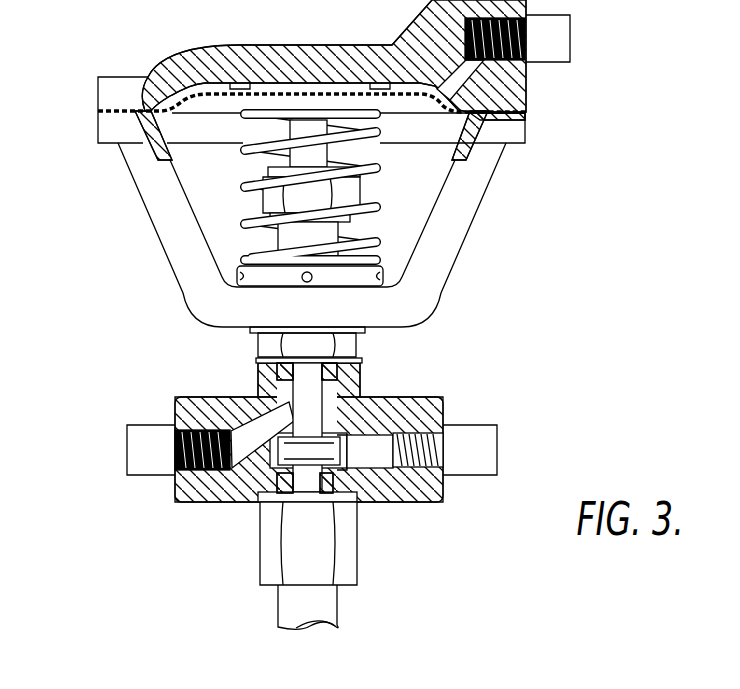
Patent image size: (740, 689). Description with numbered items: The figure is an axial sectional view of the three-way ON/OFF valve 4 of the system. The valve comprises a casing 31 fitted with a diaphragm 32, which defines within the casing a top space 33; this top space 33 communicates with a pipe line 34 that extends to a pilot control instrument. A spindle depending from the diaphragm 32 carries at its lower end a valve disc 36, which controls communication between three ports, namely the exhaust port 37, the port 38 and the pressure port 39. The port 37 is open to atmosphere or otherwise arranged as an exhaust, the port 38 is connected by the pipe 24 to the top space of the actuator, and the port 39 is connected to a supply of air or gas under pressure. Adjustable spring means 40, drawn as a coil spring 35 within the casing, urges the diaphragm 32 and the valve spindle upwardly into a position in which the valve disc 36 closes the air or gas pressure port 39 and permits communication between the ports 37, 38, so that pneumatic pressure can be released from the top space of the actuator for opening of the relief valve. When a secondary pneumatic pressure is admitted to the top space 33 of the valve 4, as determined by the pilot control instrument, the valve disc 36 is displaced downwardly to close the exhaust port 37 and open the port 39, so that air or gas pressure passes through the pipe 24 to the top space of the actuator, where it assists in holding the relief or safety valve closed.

The three-way ON/OFF valve 4 is at (142, 218).
The pipe 24 is at (473, 458).
The casing 31 is at (270, 52).
The diaphragm 32 is at (213, 92).
The top space 33 is at (397, 88).
The pipe line 34 is at (553, 42).
The spring 35 is at (310, 145).
The valve disc 36 is at (330, 445).
The exhaust port 37 is at (278, 487).
The port 38 is at (438, 430).
The air or gas pressure port 39 is at (203, 467).
The adjustable spring means 40 is at (362, 243).